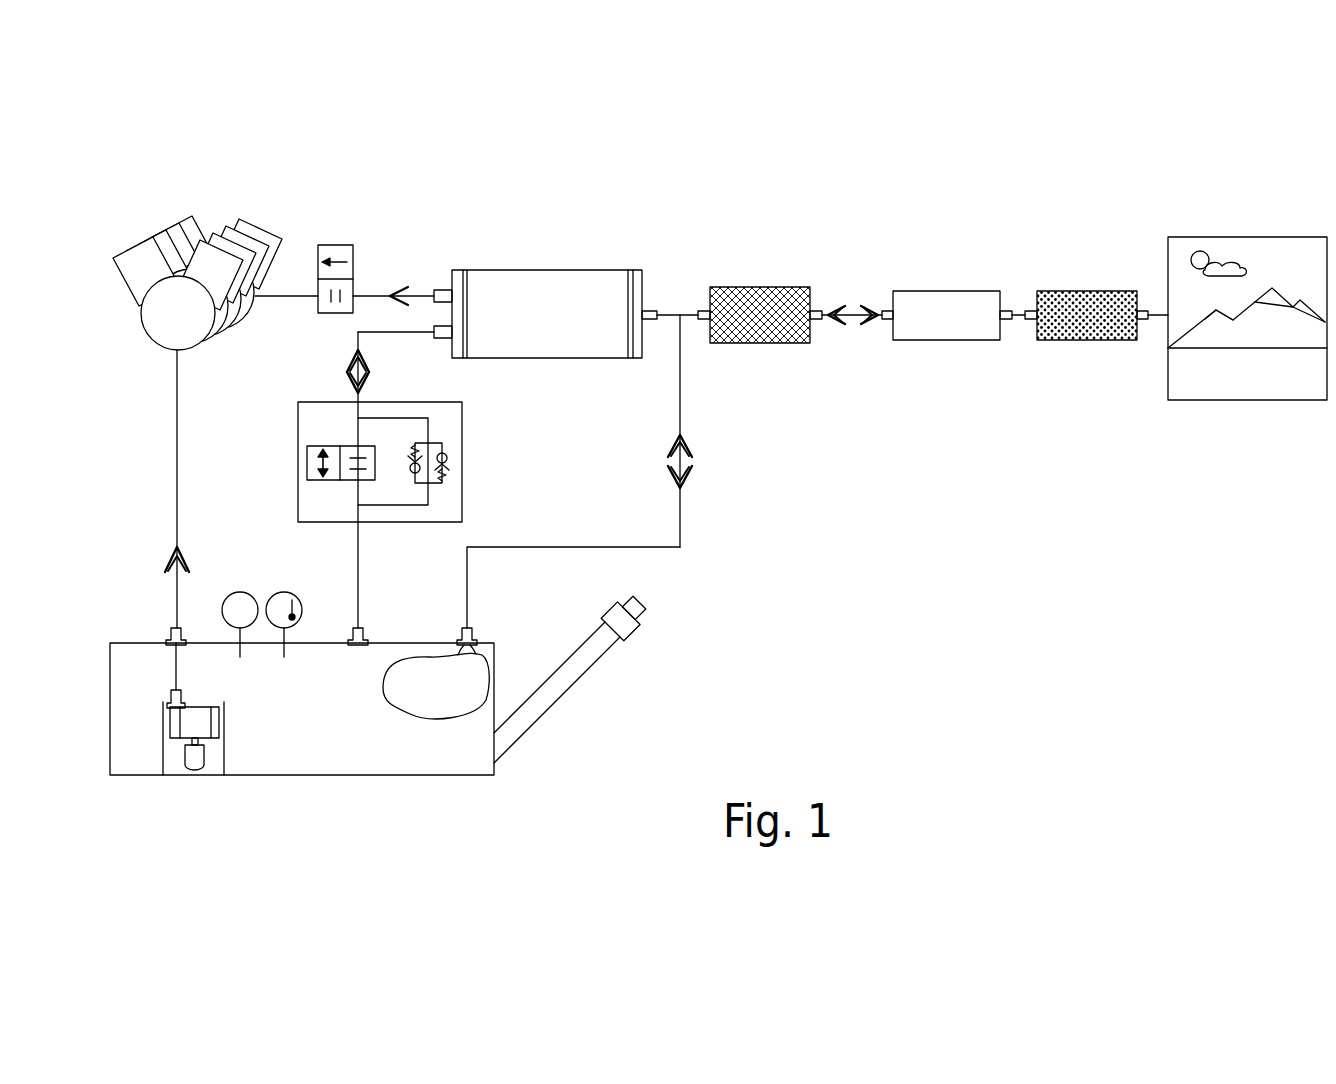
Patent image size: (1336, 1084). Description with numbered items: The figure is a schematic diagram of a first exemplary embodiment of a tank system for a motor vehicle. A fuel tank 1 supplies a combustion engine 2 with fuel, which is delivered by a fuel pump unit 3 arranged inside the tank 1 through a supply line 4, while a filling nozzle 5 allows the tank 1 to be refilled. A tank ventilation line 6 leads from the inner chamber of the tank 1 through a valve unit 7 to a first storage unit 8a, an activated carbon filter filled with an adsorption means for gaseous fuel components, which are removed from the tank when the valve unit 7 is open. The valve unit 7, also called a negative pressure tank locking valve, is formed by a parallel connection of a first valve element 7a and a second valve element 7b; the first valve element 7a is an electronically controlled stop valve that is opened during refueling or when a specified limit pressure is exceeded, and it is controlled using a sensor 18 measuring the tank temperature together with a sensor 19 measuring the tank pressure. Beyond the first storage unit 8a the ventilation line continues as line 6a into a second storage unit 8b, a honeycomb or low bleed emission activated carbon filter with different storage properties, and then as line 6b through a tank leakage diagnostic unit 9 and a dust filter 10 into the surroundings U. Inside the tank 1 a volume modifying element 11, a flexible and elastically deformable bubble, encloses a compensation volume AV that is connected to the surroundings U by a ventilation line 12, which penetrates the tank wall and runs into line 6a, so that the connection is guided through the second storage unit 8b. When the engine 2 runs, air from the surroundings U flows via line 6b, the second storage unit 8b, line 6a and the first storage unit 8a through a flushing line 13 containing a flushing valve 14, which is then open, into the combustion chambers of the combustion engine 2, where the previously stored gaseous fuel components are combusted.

The tank 1 is at (305, 640).
The combustion engine 2 is at (163, 318).
The fuel pump unit 3 is at (186, 718).
The supply line 4 is at (177, 494).
The filling nozzle 5 is at (578, 688).
The tank ventilation line 6 is at (362, 532).
The line 6a is at (665, 308).
The line 6b is at (855, 308).
The valve unit 7 is at (372, 426).
The first valve element 7a is at (307, 461).
The second valve element 7b is at (440, 448).
The first storage unit 8a is at (573, 345).
The second storage unit 8b is at (757, 308).
The tank leakage diagnostic unit 9 is at (940, 312).
The dust filter 10 is at (1095, 312).
The volume modifying element 11 is at (477, 664).
The ventilation line 12 is at (467, 585).
The flushing line 13 is at (372, 296).
The flushing valve 14 is at (338, 250).
The sensor 18 is at (284, 590).
The sensor 19 is at (238, 590).
The compensation volume AV is at (493, 672).
The surroundings U is at (1240, 375).